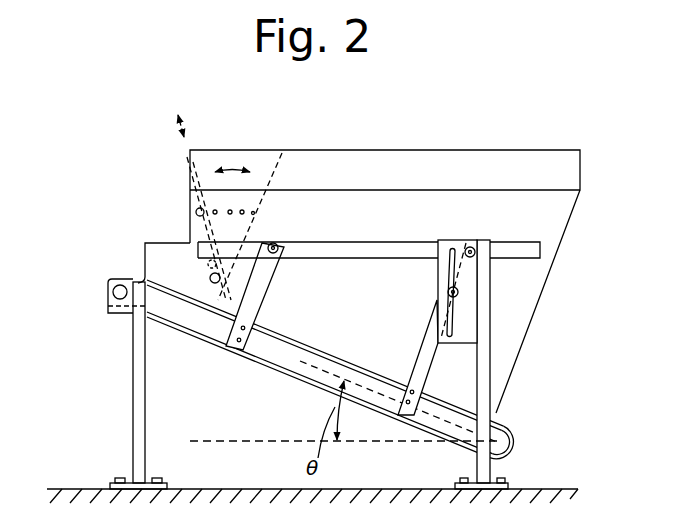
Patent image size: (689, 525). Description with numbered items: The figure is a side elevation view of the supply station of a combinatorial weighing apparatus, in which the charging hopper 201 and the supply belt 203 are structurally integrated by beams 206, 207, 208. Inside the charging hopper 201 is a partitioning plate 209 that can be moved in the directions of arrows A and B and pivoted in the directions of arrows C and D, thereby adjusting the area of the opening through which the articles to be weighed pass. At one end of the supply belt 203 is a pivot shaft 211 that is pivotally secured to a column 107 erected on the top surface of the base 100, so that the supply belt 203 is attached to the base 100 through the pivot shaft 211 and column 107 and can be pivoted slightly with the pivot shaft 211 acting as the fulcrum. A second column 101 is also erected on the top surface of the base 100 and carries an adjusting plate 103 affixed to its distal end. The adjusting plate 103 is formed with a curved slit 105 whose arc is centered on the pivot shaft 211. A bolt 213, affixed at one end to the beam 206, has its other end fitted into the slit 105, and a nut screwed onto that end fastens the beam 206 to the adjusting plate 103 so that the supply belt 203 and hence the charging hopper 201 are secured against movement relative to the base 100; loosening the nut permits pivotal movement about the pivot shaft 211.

The base 100 is at (65, 489).
The column 101 is at (483, 317).
The adjusting plate 103 is at (472, 295).
The curved slit 105 is at (540, 261).
The column 107 is at (142, 350).
The charging hopper 201 is at (445, 160).
The supply belt 203 is at (512, 425).
The beam 206 is at (427, 357).
The beam 207 is at (256, 300).
The beam 208 is at (540, 243).
The partitioning plate 209 is at (190, 178).
The pivot shaft 211 is at (108, 292).
The bolt 213 is at (447, 289).